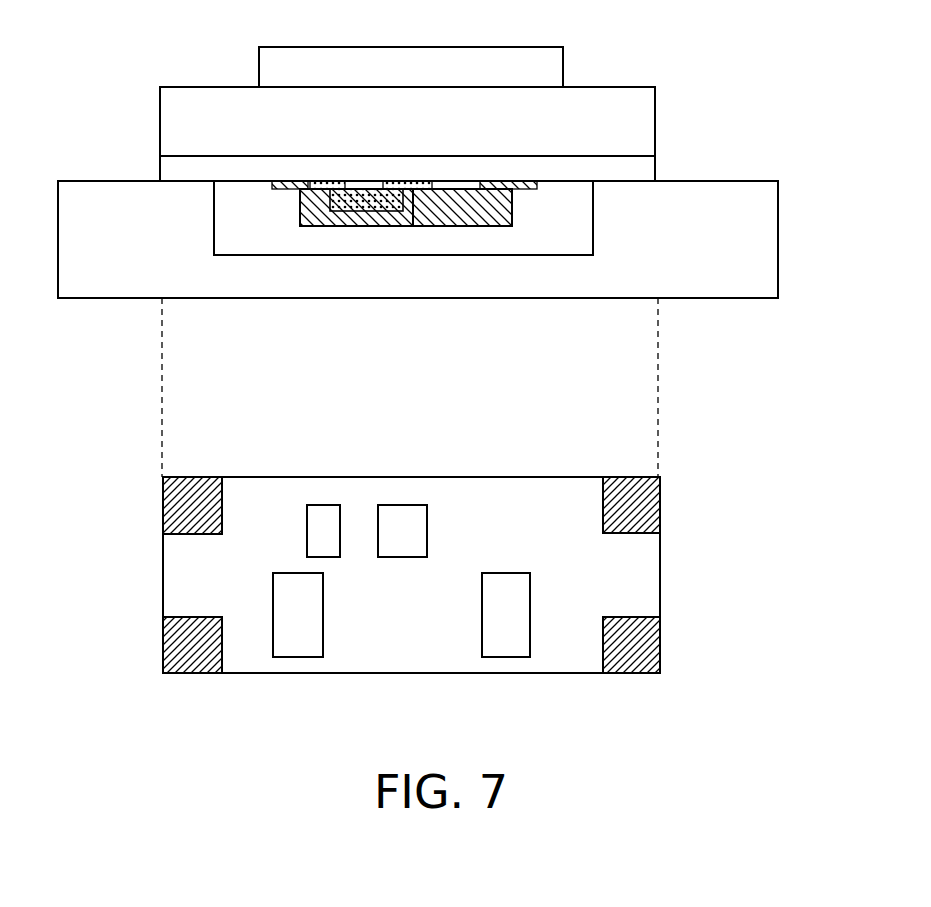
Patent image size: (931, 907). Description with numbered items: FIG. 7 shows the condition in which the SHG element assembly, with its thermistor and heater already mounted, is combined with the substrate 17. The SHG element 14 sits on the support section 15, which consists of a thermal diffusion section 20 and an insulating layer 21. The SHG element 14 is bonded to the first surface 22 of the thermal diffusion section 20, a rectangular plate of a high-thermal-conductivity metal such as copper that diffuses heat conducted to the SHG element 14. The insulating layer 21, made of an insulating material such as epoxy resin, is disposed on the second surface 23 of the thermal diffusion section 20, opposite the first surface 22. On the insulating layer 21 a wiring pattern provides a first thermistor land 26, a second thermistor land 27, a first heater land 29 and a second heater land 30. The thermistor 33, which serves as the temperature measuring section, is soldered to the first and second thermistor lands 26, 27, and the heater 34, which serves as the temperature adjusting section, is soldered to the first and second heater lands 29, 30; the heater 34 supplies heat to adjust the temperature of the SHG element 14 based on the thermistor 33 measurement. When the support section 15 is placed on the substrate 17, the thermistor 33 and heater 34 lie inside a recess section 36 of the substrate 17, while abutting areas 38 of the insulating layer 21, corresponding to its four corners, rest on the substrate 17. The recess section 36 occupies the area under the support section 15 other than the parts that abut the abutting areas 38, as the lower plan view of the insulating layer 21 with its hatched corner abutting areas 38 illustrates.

The SHG element 14 is at (563, 66).
The support section 15 is at (723, 95).
The substrate 17 is at (778, 233).
The thermal diffusion section 20 is at (655, 115).
The insulating layer 21 is at (655, 162).
The first surface 22 is at (278, 88).
The second surface 23 is at (170, 156).
The first thermistor land 26 is at (414, 191).
The second thermistor land 27 is at (318, 191).
The first heater land 29 is at (525, 188).
The second heater land 30 is at (276, 185).
The thermistor 33 is at (338, 210).
The heater 34 is at (460, 206).
The recess section 36 is at (592, 226).
The abutting areas 38 is at (163, 518).